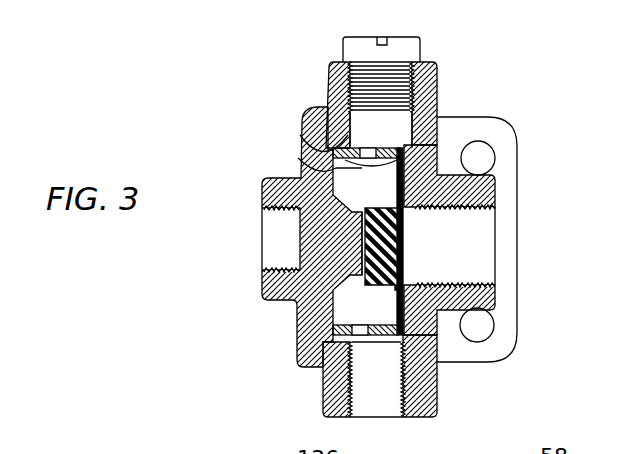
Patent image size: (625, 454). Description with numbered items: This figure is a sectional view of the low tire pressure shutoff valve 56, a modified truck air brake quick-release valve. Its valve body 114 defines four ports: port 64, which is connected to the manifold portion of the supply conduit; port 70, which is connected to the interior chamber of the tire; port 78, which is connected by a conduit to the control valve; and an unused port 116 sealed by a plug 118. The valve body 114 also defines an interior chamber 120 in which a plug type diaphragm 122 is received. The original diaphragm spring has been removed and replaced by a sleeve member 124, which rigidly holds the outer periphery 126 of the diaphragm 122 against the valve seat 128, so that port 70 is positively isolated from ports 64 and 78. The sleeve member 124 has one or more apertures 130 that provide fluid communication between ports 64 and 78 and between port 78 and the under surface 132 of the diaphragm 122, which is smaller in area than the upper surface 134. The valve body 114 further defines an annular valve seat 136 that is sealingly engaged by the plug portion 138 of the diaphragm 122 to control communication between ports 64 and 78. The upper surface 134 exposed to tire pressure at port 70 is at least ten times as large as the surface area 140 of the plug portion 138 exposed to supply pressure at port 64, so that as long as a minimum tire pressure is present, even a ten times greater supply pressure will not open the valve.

The low tire pressure shutoff valve 56 is at (508, 114).
The port 64 is at (262, 243).
The port 70 is at (478, 260).
The port 78 is at (369, 404).
The valve body 114 is at (300, 123).
The unused port 116 is at (390, 123).
The plug 118 is at (393, 80).
The interior chamber 120 is at (410, 190).
The plug type diaphragm 122 is at (404, 262).
The sleeve member 124 is at (312, 124).
The outer periphery 126 is at (394, 342).
The valve seat 128 is at (436, 379).
The apertures 130 is at (300, 156).
The under surface 132 is at (399, 168).
The upper surface 134 is at (402, 305).
The annular valve seat 136 is at (364, 235).
The plug portion 138 is at (399, 240).
The surface area 140 is at (362, 250).